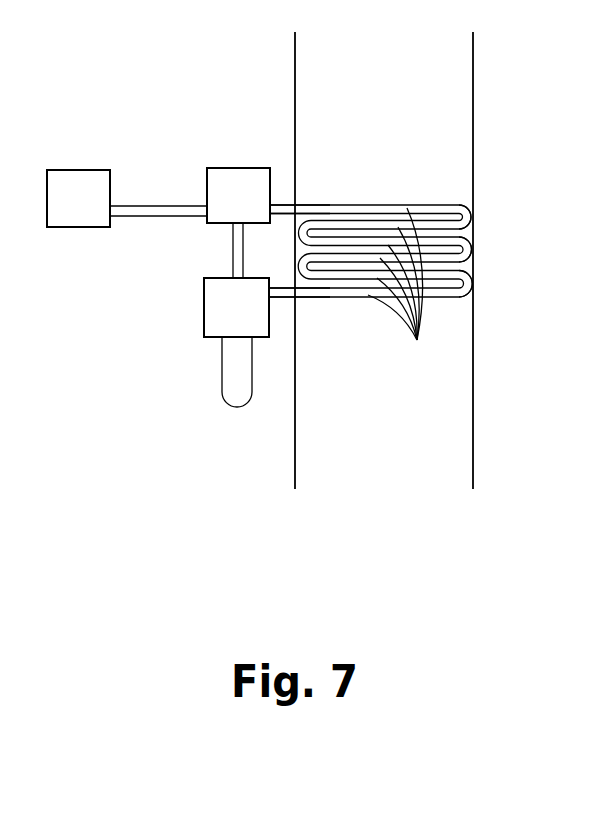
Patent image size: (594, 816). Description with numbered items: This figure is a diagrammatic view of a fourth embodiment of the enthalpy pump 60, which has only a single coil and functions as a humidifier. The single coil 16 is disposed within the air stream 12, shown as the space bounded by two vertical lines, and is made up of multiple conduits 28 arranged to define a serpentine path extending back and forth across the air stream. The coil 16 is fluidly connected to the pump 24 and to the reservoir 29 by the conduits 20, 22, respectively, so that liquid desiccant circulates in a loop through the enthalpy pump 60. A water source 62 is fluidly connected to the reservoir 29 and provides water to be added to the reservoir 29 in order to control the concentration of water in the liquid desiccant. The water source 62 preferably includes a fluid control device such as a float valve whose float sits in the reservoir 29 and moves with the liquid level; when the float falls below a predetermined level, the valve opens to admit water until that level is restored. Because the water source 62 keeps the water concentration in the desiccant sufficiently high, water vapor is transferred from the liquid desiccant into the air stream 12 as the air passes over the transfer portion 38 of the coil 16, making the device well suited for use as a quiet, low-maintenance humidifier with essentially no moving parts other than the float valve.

The air stream 12 is at (474, 412).
The coil 16 is at (368, 204).
The conduit 20 is at (325, 300).
The conduit 22 is at (308, 205).
The pump 24 is at (255, 330).
The conduits 28 is at (472, 218).
The reservoir 29 is at (262, 168).
The transfer portion 38 is at (398, 289).
The enthalpy pump 60 is at (396, 67).
The water source 62 is at (87, 170).